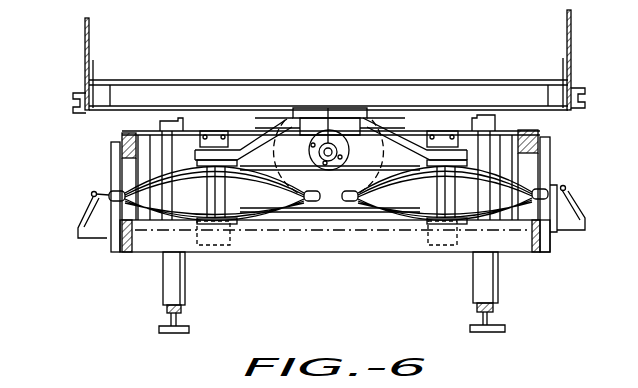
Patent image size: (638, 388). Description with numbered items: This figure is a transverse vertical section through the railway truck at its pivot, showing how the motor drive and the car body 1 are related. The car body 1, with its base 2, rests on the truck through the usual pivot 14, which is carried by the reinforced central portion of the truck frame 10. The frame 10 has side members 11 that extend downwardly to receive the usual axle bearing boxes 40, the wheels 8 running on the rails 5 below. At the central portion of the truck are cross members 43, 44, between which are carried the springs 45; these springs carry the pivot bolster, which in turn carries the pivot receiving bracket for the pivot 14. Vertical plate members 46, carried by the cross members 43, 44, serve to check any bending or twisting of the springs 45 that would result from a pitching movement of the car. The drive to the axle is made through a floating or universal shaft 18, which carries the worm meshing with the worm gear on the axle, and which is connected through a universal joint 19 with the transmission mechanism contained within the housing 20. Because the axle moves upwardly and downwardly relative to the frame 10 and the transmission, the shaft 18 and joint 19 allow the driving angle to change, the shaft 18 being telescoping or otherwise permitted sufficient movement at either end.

The car body 1 is at (85, 42).
The base 2 is at (73, 100).
The rails 5 is at (185, 325).
The wheels 8 is at (163, 300).
The frame 10 is at (118, 152).
The side members 11 is at (128, 253).
The pivot 14 is at (357, 108).
The floating or universal shaft 18 is at (332, 154).
The universal joint 19 is at (340, 157).
The housing 20 is at (385, 160).
The axle bearing boxes 40 is at (92, 240).
The cross member 43 is at (213, 253).
The cross member 44 is at (500, 127).
The springs 45 is at (258, 220).
The vertical plate members 46 is at (213, 130).